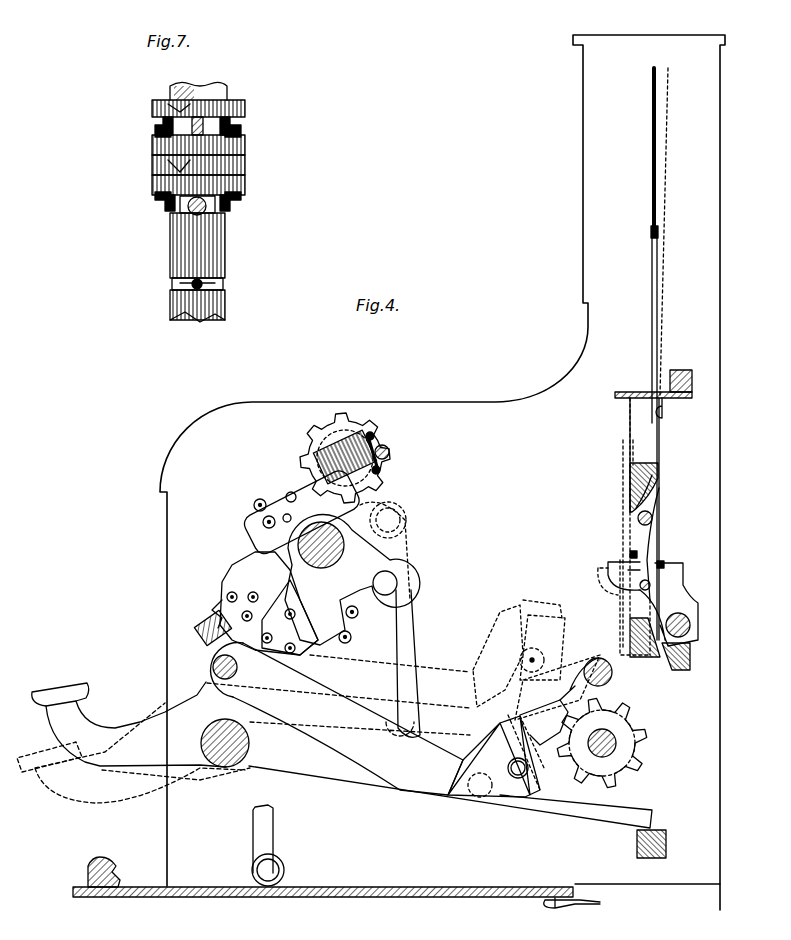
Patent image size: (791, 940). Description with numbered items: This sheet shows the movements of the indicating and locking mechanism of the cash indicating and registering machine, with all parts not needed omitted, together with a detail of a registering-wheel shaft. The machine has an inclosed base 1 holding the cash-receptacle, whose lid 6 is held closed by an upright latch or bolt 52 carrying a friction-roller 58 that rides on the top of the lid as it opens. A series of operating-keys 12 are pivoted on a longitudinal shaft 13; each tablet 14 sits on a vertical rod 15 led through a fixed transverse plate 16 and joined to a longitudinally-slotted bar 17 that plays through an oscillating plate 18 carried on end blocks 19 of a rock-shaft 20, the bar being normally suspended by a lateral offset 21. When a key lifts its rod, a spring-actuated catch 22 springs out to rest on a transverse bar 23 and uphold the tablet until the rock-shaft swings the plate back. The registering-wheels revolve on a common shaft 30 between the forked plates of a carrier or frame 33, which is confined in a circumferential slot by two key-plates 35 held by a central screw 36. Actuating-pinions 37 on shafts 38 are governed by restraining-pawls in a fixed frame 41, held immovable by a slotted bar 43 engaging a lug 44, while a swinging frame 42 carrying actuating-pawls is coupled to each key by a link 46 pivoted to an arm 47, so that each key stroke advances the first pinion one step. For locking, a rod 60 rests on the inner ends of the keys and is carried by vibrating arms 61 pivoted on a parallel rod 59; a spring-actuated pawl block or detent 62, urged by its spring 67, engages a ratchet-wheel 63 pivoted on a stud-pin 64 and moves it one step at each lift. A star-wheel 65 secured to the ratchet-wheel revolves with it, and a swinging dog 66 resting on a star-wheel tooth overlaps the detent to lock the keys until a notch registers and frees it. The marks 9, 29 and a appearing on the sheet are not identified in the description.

In FIG. 4, the base 1 is at (78, 905).
In FIG. 4, the lid 6 is at (357, 887).
In FIG. 4, the base lug 9 is at (592, 900).
In FIG. 4, the operating-keys 12 is at (341, 770).
In FIG. 4, the longitudinal shaft 13 is at (222, 735).
In FIG. 4, the tablets 14 is at (652, 168).
In FIG. 4, the vertical rod 15 is at (652, 292).
In FIG. 4, the fixed transverse plate 16 is at (632, 386).
In FIG. 4, the longitudinally-slotted bars 17 is at (628, 450).
In FIG. 4, the oscillating plate 18 is at (612, 562).
In FIG. 4, the end blocks 19 is at (674, 582).
In FIG. 4, the rock-shaft 20 is at (682, 616).
In FIG. 4, the lateral plate or offset 21 is at (665, 416).
In FIG. 4, the spring-actuated catch 22 is at (630, 620).
In FIG. 4, the transverse bar 23 is at (684, 670).
In FIG. 7, the ratchet wheel 29 is at (160, 106).
In FIG. 4, the ratchet wheel 29 is at (328, 428).
In FIG. 7, the common shaft 30 is at (197, 267).
In FIG. 4, the common shaft 30 is at (344, 457).
In FIG. 7, the carrier or frame 33 is at (157, 132).
In FIG. 4, the carrier or frame 33 is at (302, 512).
In FIG. 7, the key-plates 35 is at (222, 102).
In FIG. 4, the key-plates 35 is at (372, 434).
In FIG. 7, the central screw 36 is at (190, 212).
In FIG. 4, the central screw 36 is at (388, 450).
In FIG. 4, the actuating-pinions 37 is at (380, 528).
In FIG. 4, the shafts 38 is at (328, 562).
In FIG. 4, the frame 41 is at (269, 603).
In FIG. 4, the swinging frame 42 is at (290, 617).
In FIG. 4, the longitudinally-slotted bar 43 is at (204, 618).
In FIG. 4, the lug 44 is at (216, 606).
In FIG. 4, the link 46 is at (415, 663).
In FIG. 4, the arm 47 is at (378, 578).
In FIG. 4, the upright latch or bolt 52 is at (253, 822).
In FIG. 4, the friction-roller 58 is at (283, 864).
In FIG. 4, the parallel rod 59 is at (213, 666).
In FIG. 4, the rod 60 is at (518, 768).
In FIG. 4, the vibrating arms 61 is at (348, 719).
In FIG. 4, the pawl block or detent 62 is at (496, 756).
In FIG. 4, the ratchet-wheel 63 is at (612, 690).
In FIG. 4, the stud-pin 64 is at (602, 752).
In FIG. 4, the star-wheel 65 is at (601, 742).
In FIG. 4, the swinging dog 66 is at (566, 713).
In FIG. 4, the spring 67 is at (510, 730).
In FIG. 7, the ratchet teeth a is at (176, 108).